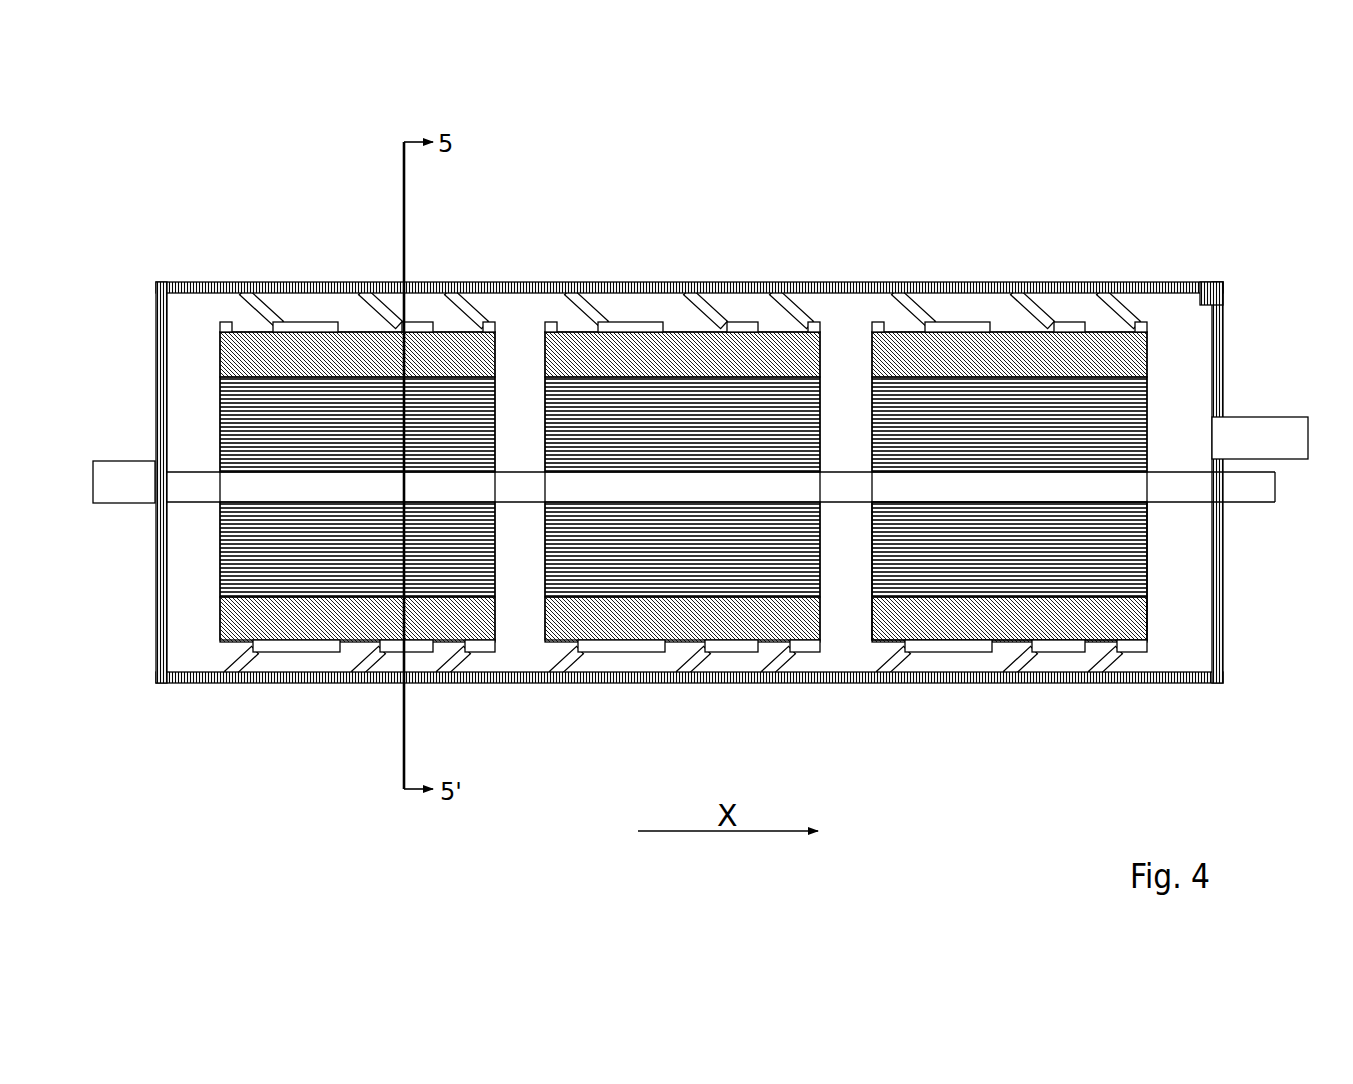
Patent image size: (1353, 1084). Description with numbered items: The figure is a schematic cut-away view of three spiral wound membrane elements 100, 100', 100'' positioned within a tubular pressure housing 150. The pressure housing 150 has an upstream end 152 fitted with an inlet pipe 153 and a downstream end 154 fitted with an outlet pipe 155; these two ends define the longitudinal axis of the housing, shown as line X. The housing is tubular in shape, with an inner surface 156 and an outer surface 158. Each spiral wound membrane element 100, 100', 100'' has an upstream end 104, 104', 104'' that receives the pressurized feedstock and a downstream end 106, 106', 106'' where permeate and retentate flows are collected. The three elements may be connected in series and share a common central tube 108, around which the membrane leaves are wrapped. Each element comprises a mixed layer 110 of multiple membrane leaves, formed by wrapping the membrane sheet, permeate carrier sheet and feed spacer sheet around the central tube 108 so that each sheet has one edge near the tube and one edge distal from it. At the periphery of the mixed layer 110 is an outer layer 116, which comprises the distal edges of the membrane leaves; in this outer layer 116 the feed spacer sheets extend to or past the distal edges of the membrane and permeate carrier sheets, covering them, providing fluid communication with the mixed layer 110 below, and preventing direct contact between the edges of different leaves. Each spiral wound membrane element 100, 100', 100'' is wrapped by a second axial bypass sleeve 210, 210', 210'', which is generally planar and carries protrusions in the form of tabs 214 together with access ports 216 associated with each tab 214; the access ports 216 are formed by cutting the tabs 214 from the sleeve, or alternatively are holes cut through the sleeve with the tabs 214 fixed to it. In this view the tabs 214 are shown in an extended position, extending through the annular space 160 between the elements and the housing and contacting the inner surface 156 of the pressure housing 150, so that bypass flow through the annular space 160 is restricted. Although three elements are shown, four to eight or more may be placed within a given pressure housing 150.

The spiral wound membrane element 100 is at (317, 470).
The spiral wound membrane element 100' is at (683, 479).
The spiral wound membrane element 100'' is at (1037, 475).
The upstream end 104 is at (286, 402).
The upstream end 104' is at (646, 352).
The upstream end 104'' is at (991, 438).
The downstream end 106 is at (389, 621).
The downstream end 106' is at (719, 616).
The downstream end 106'' is at (1083, 571).
The central tube 108 is at (701, 497).
The mixed layer 110 is at (1148, 420).
The outer layer 116 is at (1148, 346).
The pressure housing 150 is at (686, 490).
The upstream end 152 is at (155, 598).
The inlet pipe 153 is at (120, 504).
The downstream end 154 is at (1222, 650).
The outlet pipe 155 is at (1285, 460).
The inner surface 156 is at (1192, 288).
The outer surface 158 is at (1140, 288).
The annular space 160 is at (658, 312).
The second axial bypass sleeve 210 is at (317, 266).
The second axial bypass sleeve 210' is at (683, 262).
The second axial bypass sleeve 210'' is at (966, 263).
The tab 214 is at (256, 304).
The access port 216 is at (243, 320).